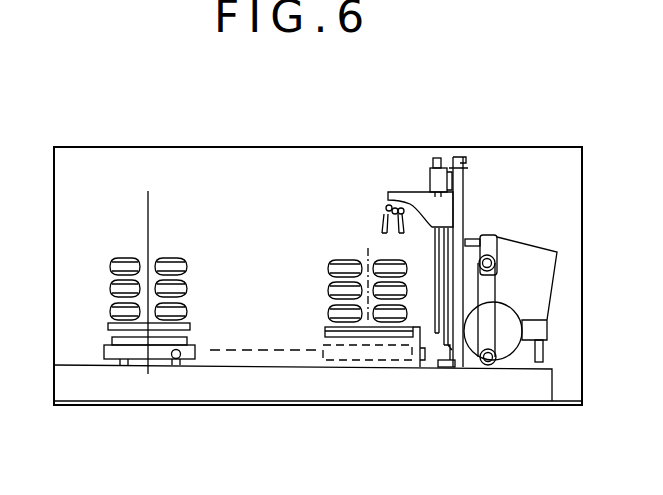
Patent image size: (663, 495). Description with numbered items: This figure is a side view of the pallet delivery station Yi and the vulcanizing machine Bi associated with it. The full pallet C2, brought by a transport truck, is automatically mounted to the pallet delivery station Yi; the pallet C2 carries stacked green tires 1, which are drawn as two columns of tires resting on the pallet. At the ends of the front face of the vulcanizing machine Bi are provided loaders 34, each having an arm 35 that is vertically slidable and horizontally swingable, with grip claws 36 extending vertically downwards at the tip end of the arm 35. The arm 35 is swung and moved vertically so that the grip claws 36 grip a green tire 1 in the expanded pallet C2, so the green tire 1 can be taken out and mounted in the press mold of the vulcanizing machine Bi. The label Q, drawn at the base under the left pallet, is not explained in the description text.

The green tire 1 is at (330, 262).
The loader 34 is at (430, 180).
The arm 35 is at (416, 215).
The grip claws 36 is at (378, 220).
The pallet delivery station Yi is at (319, 332).
The pallet C2 is at (190, 327).
The lifting base Q is at (104, 352).
The vulcanizing machine Bi is at (513, 238).